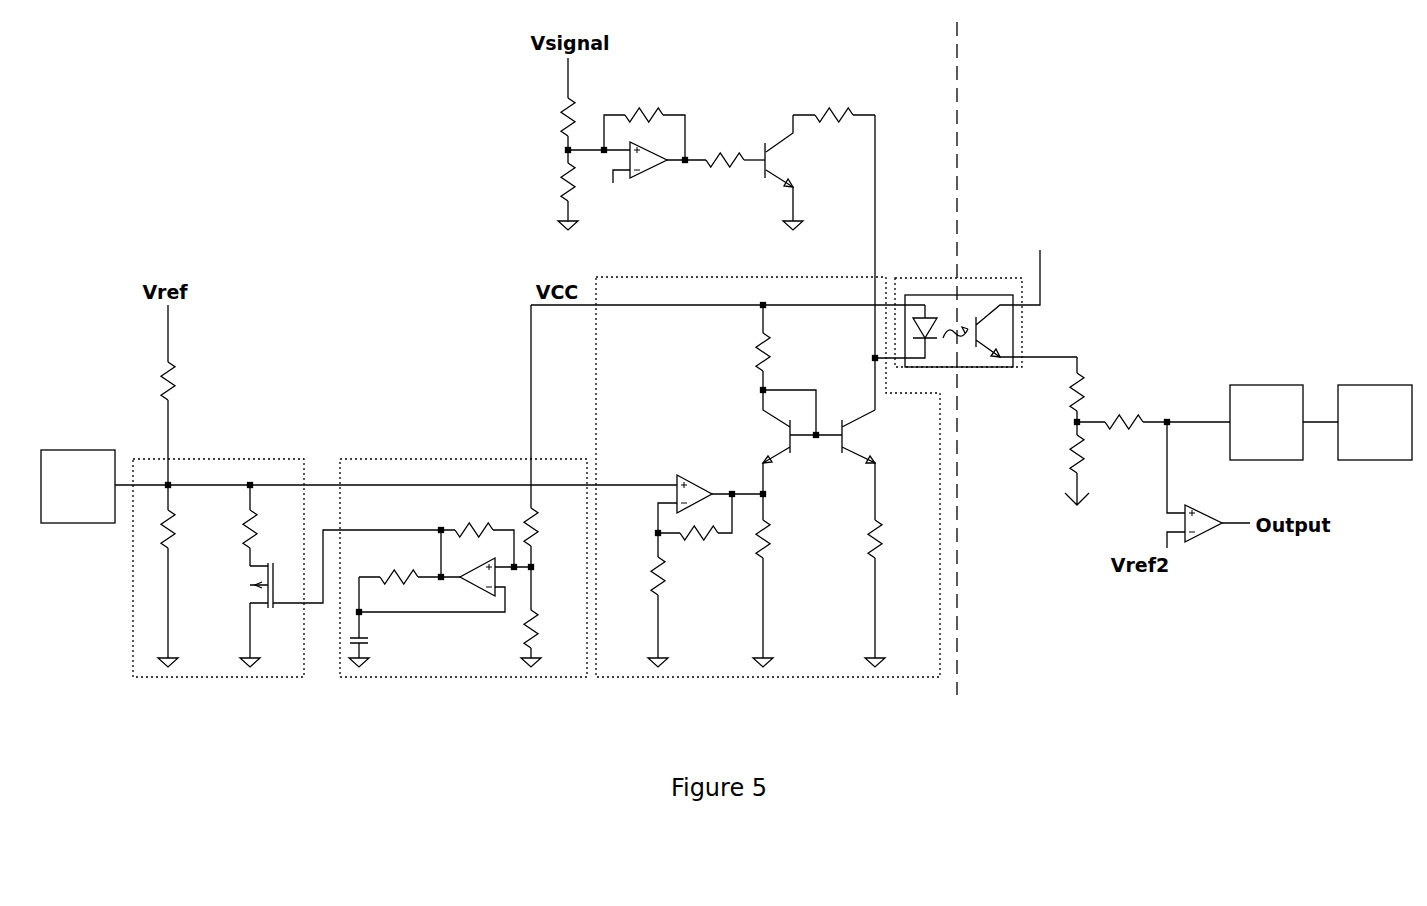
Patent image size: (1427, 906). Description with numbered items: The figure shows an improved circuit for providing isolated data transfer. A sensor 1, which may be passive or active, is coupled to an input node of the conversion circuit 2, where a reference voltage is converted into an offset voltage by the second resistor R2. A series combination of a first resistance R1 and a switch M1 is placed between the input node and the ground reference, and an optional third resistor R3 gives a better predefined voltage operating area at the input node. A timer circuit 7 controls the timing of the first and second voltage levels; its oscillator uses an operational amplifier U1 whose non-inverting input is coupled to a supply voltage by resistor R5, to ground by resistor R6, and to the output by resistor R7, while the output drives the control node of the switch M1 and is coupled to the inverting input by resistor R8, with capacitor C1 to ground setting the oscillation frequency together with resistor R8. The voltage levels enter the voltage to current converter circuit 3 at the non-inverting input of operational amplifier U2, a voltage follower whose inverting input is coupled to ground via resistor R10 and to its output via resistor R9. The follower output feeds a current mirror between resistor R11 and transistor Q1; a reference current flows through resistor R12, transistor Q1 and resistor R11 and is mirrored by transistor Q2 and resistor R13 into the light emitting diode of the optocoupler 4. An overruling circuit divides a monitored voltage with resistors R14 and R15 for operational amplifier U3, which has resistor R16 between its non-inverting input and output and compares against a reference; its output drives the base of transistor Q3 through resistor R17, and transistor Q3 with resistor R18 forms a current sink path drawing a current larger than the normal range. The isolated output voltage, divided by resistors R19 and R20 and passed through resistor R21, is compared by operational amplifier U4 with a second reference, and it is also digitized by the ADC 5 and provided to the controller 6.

The sensor 1 is at (78, 486).
The conversion circuit 2 is at (218, 556).
The voltage to current converter circuit 3 is at (768, 464).
The optocoupler 4 is at (976, 296).
The ADC 5 is at (1266, 422).
The controller 6 is at (1375, 422).
The timer circuit 7 is at (463, 491).
The first resistance R1 is at (267, 525).
The second resistor R2 is at (184, 395).
The third resistor R3 is at (183, 576).
The resistor R5 is at (549, 436).
The resistor R6 is at (547, 617).
The resistor R7 is at (474, 518).
The resistor R8 is at (400, 564).
The resistor R9 is at (694, 530).
The resistor R10 is at (635, 600).
The resistor R11 is at (787, 580).
The resistor R12 is at (787, 347).
The resistor R13 is at (895, 593).
The resistor R14 is at (542, 104).
The resistor R15 is at (543, 190).
The resistor R16 is at (644, 119).
The resistor R17 is at (735, 145).
The resistor R18 is at (834, 101).
The resistor R19 is at (1051, 389).
The resistor R20 is at (1054, 463).
The resistor R21 is at (1153, 407).
The operational amplifier U1 is at (436, 585).
The operational amplifier U2 is at (712, 492).
The operational amplifier U3 is at (650, 176).
The operational amplifier U4 is at (1208, 485).
The transistor Q1 is at (763, 442).
The transistor Q2 is at (869, 465).
The transistor Q3 is at (794, 172).
The switch M1 is at (232, 615).
The capacitor C1 is at (374, 622).